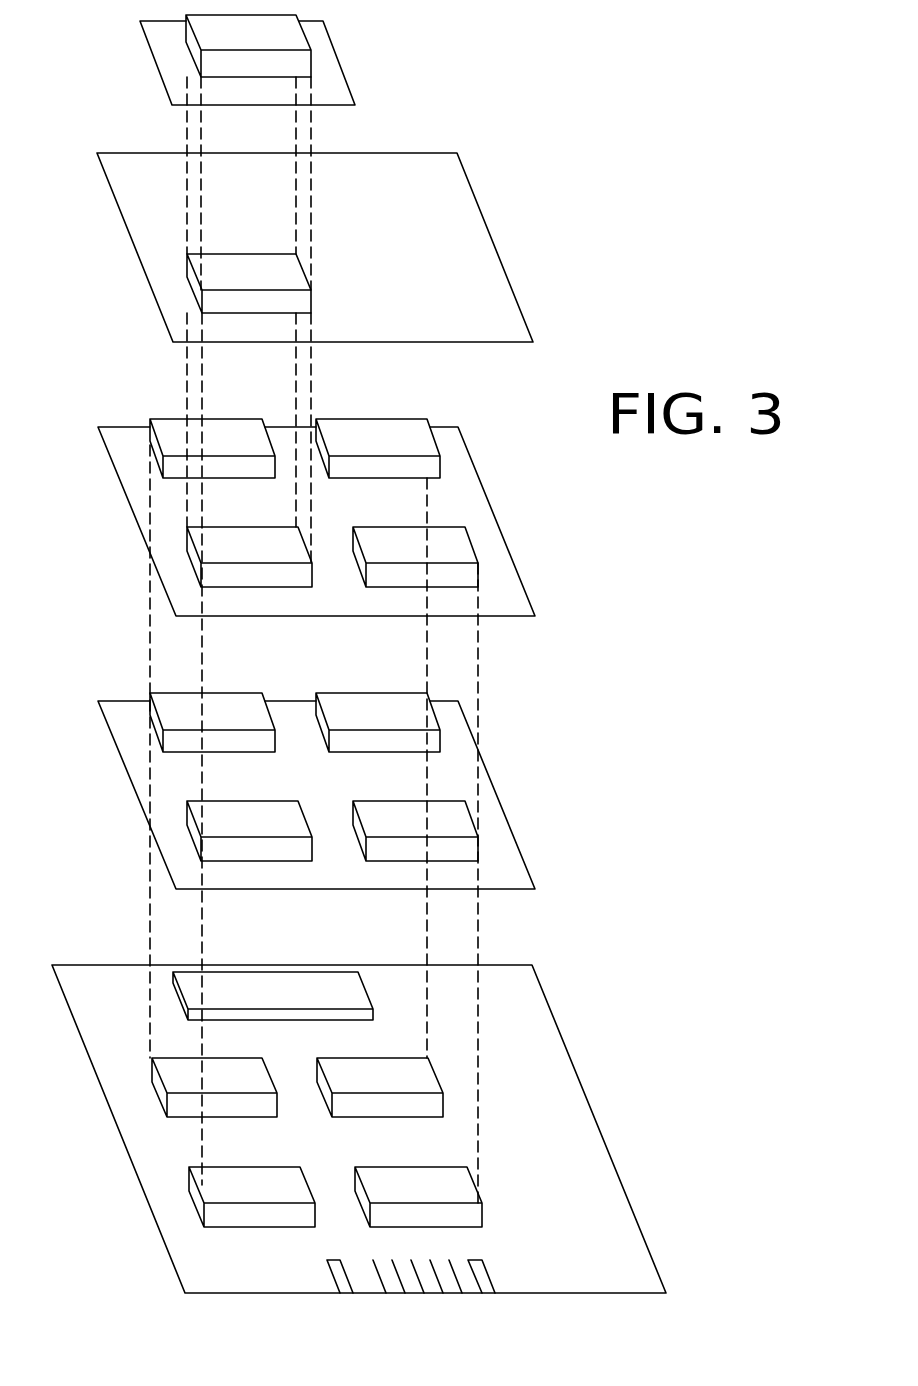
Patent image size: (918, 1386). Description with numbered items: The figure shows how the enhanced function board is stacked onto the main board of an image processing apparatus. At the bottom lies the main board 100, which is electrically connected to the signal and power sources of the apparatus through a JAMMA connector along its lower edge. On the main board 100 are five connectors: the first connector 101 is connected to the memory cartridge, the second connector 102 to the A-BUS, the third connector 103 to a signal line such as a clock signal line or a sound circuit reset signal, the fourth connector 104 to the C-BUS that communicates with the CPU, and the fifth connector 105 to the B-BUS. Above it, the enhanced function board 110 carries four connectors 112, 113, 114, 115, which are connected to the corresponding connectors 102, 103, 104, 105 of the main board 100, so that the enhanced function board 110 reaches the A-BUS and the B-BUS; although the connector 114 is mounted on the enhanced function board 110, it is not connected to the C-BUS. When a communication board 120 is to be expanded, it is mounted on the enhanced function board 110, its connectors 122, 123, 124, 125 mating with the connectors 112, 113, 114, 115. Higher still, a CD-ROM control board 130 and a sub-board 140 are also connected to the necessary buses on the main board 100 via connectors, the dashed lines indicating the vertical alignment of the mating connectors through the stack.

The main board 100 is at (110, 1108).
The first connector 101 is at (342, 988).
The second connector 102 is at (385, 1108).
The third connector 103 is at (238, 1107).
The fourth connector 104 is at (463, 1220).
The fifth connector 105 is at (263, 1218).
The enhanced function board 110 is at (128, 780).
The connector 112 is at (358, 707).
The connector 113 is at (232, 707).
The connector 114 is at (400, 818).
The connector 115 is at (240, 818).
The communication board 120 is at (133, 513).
The connector 122 is at (368, 432).
The connector 123 is at (223, 432).
The connector 124 is at (395, 543).
The connector 125 is at (268, 543).
The CD-ROM control board 130 is at (128, 233).
The sub-board 140 is at (155, 62).